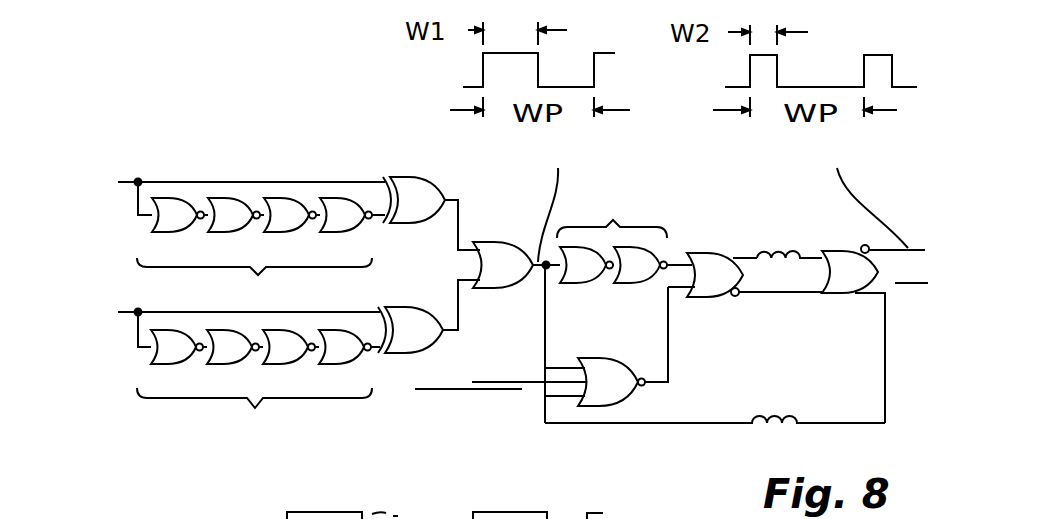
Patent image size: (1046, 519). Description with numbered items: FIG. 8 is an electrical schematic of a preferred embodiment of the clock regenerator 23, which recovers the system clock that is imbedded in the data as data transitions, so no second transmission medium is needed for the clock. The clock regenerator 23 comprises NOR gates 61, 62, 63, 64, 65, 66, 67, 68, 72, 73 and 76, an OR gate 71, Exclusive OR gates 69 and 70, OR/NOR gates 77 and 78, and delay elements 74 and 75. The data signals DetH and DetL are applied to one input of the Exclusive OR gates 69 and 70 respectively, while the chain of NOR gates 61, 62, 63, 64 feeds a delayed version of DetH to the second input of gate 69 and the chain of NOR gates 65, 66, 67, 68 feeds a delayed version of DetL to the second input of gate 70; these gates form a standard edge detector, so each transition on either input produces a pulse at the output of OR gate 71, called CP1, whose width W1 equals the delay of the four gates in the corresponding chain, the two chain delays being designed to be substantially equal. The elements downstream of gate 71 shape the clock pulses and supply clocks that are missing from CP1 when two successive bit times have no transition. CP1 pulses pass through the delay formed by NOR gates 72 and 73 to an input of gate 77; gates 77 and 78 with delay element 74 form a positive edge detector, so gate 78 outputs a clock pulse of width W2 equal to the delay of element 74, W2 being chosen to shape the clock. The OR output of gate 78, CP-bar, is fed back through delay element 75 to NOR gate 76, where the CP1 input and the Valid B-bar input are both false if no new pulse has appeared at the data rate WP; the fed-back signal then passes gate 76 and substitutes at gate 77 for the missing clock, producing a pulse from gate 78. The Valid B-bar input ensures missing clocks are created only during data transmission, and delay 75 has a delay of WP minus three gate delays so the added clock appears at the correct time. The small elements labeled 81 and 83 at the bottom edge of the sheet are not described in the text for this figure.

The clock regenerator 23 is at (490, 258).
The NOR gate 61 is at (180, 232).
The NOR gate 62 is at (237, 232).
The NOR gate 63 is at (294, 232).
The NOR gate 64 is at (350, 232).
The NOR gate 65 is at (180, 364).
The NOR gate 66 is at (237, 364).
The NOR gate 67 is at (294, 364).
The NOR gate 68 is at (353, 364).
The Exclusive OR gate 69 is at (420, 167).
The Exclusive OR gate 70 is at (433, 293).
The OR gate 71 is at (505, 242).
The NOR gate 72 is at (590, 283).
The NOR gate 73 is at (649, 283).
The delay element 74 is at (762, 250).
The delay element 75 is at (790, 412).
The NOR gate 76 is at (623, 344).
The OR/NOR gate 77 is at (725, 297).
The OR/NOR gate 78 is at (857, 294).
The register 81 is at (280, 518).
The register 83 is at (463, 508).